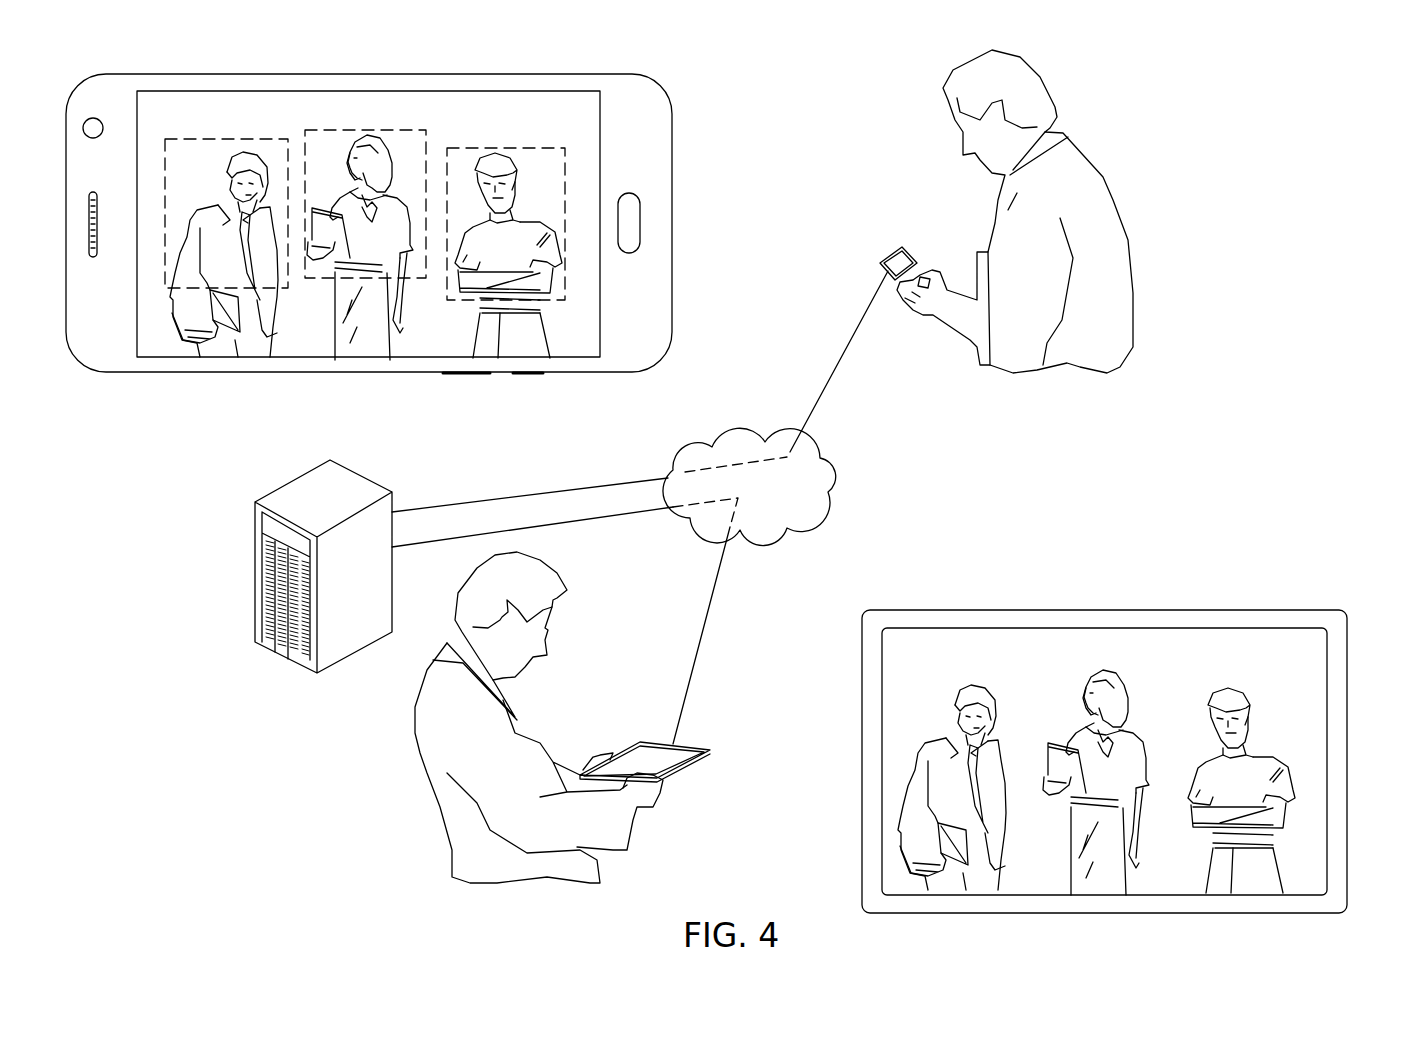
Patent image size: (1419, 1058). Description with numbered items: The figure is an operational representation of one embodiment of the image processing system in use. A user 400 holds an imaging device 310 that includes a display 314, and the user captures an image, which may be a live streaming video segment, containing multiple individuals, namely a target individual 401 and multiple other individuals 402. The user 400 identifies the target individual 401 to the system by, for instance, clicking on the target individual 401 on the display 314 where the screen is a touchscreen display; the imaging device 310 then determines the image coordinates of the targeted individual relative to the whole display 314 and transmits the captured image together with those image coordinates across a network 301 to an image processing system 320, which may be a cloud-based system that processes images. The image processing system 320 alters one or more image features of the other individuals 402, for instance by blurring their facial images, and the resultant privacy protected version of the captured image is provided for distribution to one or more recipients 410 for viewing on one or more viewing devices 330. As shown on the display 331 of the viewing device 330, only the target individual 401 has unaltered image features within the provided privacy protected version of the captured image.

The network 301 is at (840, 475).
The imaging device 310 is at (883, 263).
The display 314 is at (600, 133).
The image processing system 320 is at (300, 477).
The viewing device 330 is at (862, 788).
The display of view device 331 is at (882, 713).
The user 400 is at (1100, 178).
The target individual 401 is at (538, 148).
The other individuals 402 is at (338, 128).
The recipients 410 is at (413, 747).